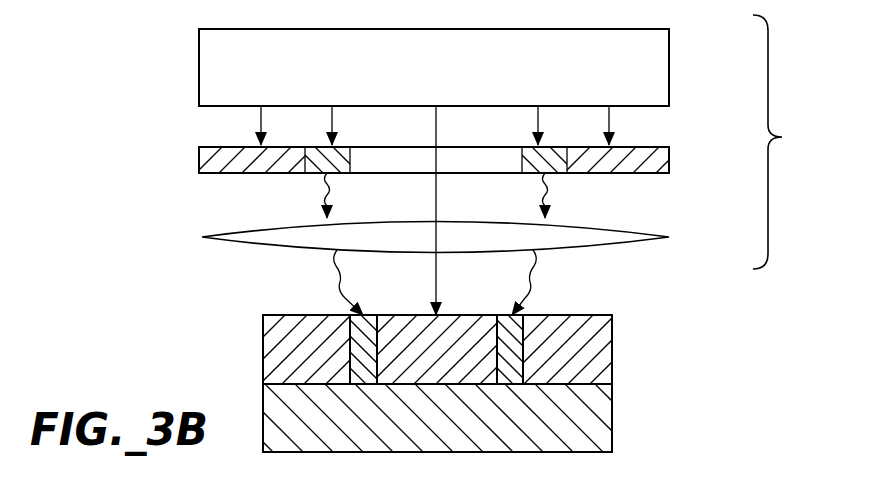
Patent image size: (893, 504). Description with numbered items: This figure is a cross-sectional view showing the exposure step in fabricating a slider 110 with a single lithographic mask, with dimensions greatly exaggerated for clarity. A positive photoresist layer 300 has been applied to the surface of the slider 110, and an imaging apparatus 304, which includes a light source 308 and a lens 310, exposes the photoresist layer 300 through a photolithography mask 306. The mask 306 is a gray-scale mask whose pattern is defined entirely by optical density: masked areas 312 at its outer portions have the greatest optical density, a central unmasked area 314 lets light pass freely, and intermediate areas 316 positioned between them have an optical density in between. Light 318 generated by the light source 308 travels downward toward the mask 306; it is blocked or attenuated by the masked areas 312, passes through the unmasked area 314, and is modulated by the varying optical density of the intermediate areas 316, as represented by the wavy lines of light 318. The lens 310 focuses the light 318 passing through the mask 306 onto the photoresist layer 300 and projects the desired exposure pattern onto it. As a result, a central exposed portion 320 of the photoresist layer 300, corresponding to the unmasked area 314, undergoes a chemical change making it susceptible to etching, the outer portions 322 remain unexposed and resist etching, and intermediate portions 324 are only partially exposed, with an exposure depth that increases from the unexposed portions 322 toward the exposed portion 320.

The imaging apparatus 304 is at (789, 142).
The light source 308 is at (670, 63).
The photolithography mask 306 is at (670, 157).
The masked areas 312 is at (237, 173).
The intermediate areas 316 is at (345, 147).
The unmasked area 314 is at (455, 148).
The light 318 is at (225, 128).
The lens 310 is at (669, 237).
The photoresist layer 300 is at (612, 340).
The slider 110 is at (612, 415).
The unexposed portions 322 is at (280, 378).
The intermediate portions 324 is at (363, 375).
The exposed portion 320 is at (425, 375).